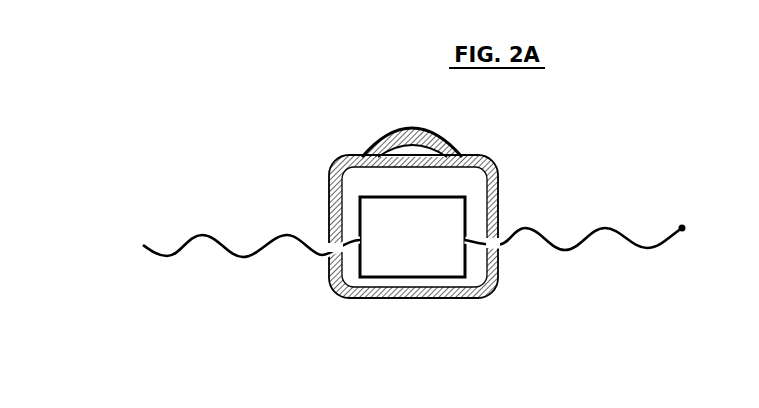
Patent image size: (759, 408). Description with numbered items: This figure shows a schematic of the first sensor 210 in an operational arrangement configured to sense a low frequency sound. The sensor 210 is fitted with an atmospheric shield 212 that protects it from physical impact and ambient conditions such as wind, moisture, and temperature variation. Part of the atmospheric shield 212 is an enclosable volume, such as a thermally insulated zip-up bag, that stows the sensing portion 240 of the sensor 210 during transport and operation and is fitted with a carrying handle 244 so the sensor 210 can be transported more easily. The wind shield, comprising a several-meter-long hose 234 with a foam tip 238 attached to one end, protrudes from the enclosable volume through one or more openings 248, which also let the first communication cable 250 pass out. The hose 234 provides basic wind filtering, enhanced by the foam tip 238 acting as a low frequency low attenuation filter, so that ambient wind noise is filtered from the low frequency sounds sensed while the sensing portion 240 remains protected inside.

The first sensor 210 is at (258, 123).
The atmospheric shield 212 is at (483, 156).
The carrying handle 244 is at (422, 130).
The sensing portion 240 is at (385, 267).
The openings 248 is at (327, 245).
The first communication cable 250 is at (180, 253).
The hose 234 is at (568, 253).
The foam tip 238 is at (684, 233).